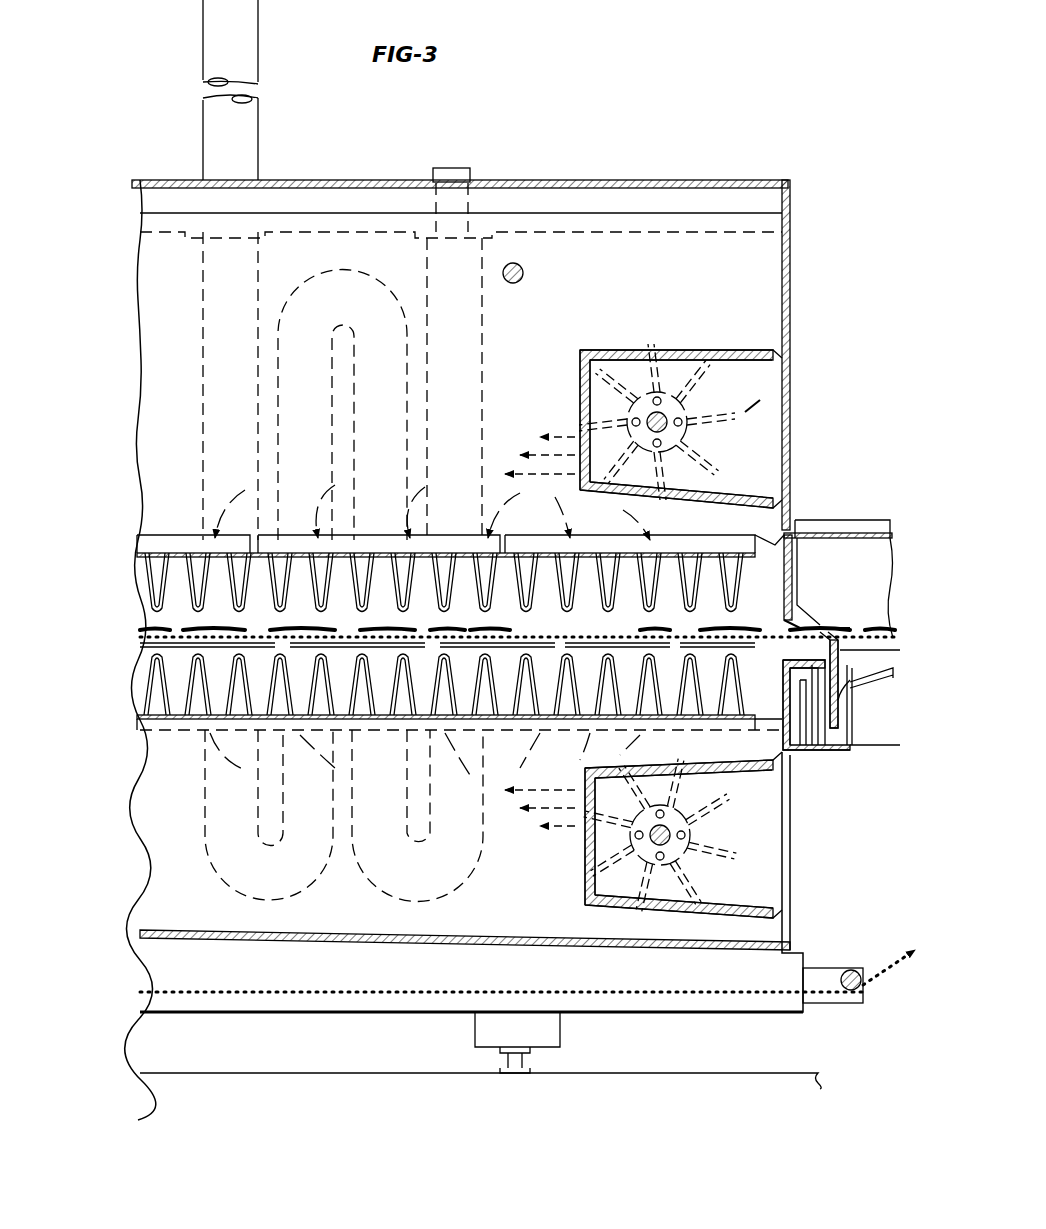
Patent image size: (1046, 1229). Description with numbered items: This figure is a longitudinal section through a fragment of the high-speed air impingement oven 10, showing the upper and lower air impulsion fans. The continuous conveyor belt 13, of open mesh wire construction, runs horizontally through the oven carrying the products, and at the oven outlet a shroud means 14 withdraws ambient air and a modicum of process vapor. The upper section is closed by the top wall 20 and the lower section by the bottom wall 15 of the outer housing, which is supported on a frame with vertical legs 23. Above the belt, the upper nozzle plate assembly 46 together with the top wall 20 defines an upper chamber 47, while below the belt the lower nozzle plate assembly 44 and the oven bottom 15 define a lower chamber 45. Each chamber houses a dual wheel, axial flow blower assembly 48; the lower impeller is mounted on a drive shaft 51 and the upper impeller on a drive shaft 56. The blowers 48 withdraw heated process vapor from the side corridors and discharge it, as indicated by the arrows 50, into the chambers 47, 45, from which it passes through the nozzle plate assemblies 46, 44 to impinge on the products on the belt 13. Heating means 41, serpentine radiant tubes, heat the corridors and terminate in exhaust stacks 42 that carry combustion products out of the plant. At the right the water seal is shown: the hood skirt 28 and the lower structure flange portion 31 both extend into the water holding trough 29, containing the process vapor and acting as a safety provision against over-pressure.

The high-speed air impingement oven 10 is at (768, 157).
The conveyor belt 13 is at (135, 637).
The shroud means 14 is at (848, 520).
The bottom wall 15 is at (372, 945).
The top wall 20 is at (633, 180).
The vertical leg 23 is at (560, 1034).
The skirt 28 is at (852, 690).
The water holding trough 29 is at (852, 745).
The flange portion 31 is at (835, 730).
The heating means 41 is at (460, 178).
The exhaust stack 42 is at (250, 118).
The lower nozzle plate assembly 44 is at (150, 688).
The lower chamber 45 is at (492, 928).
The upper nozzle plate assembly 46 is at (150, 600).
The upper chamber 47 is at (583, 296).
The dual wheel axial flow fan or blower assembly 48 is at (750, 408).
The arrows 50 is at (540, 455).
The drive shaft 51 is at (665, 835).
The drive shaft 56 is at (655, 412).